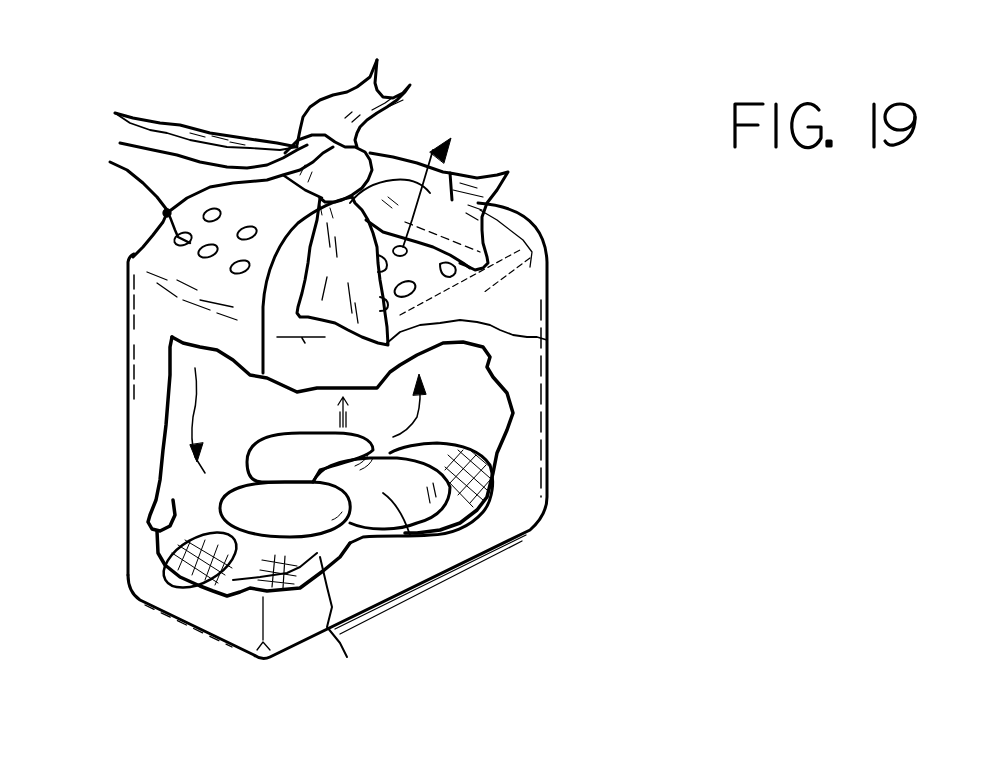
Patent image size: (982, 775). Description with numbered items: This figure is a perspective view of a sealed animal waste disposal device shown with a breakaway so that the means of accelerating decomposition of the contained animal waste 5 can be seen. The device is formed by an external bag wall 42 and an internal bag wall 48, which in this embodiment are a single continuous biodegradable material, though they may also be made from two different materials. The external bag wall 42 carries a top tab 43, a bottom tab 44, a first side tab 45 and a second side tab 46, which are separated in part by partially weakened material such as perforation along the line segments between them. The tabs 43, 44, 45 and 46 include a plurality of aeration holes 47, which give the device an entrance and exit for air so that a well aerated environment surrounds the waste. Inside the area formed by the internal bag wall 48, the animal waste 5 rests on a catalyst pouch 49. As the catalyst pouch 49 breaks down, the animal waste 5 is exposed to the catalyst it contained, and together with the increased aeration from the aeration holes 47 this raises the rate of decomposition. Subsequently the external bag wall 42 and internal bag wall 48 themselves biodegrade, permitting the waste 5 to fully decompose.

The animal waste 5 is at (428, 563).
The external bag wall 42 is at (137, 410).
The top tab 43 is at (350, 93).
The bottom tab 44 is at (547, 340).
The first side tab 45 is at (451, 185).
The second side tab 46 is at (222, 153).
The aeration holes 47 is at (133, 257).
The internal bag wall 48 is at (150, 527).
The catalyst pouch 49 is at (330, 637).